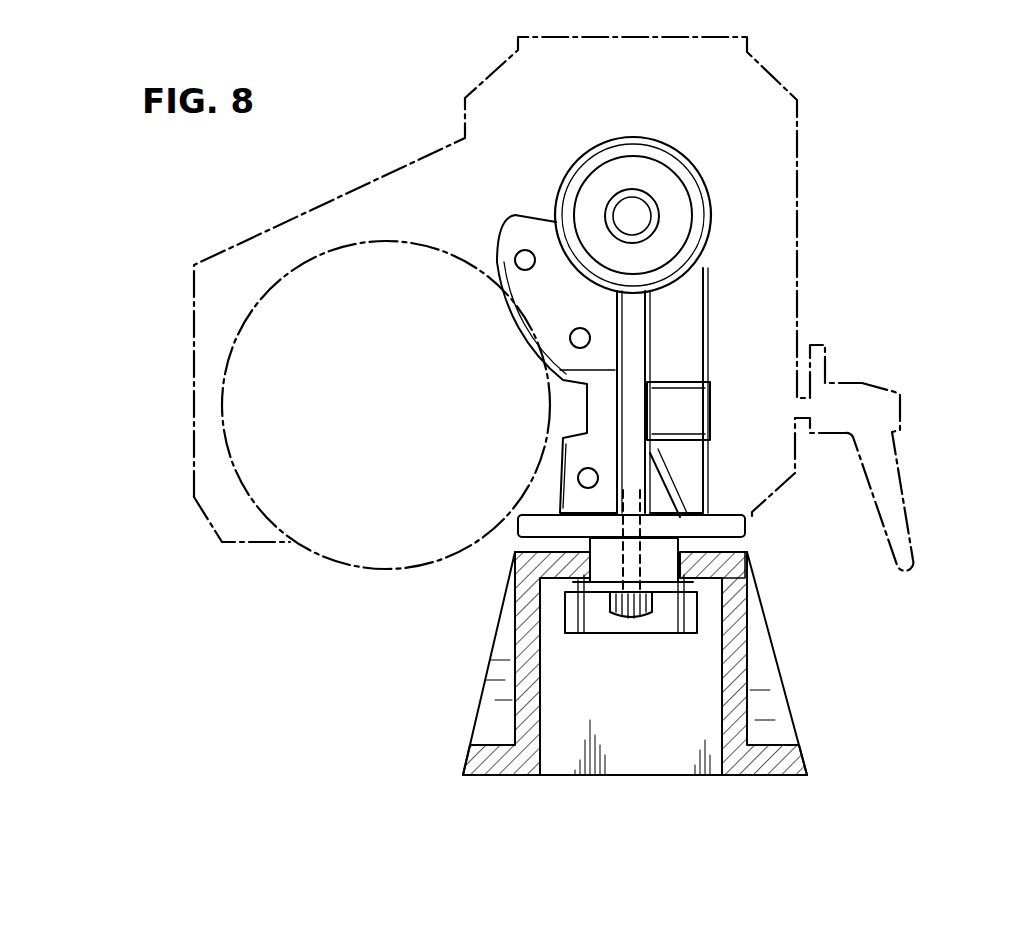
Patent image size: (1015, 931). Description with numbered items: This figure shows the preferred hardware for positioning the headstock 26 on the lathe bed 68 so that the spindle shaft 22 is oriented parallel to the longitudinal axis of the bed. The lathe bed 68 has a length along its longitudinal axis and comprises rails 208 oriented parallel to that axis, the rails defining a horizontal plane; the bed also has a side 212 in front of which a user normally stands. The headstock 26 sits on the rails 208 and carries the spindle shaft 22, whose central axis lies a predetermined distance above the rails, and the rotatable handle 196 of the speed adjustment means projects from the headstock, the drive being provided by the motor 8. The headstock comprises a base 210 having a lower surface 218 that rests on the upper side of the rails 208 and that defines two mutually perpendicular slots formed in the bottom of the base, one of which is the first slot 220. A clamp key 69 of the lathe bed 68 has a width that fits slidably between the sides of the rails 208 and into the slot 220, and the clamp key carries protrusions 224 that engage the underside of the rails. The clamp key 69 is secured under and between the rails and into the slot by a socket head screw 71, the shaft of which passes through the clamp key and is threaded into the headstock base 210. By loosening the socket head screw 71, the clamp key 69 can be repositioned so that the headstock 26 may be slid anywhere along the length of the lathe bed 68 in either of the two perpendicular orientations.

The motor 8 is at (287, 576).
The spindle shaft 22 is at (663, 221).
The headstock 26 is at (791, 80).
The lathe bed 68 is at (463, 698).
The clamp key 69 is at (660, 600).
The socket head screw 71 is at (632, 600).
The rotatable handle 196 is at (897, 518).
The rails 208 is at (747, 562).
The headstock base 210 is at (747, 530).
The side 212 is at (976, 648).
The lower surface 218 is at (708, 512).
The first slot 220 is at (538, 520).
The protrusions 224 is at (593, 600).